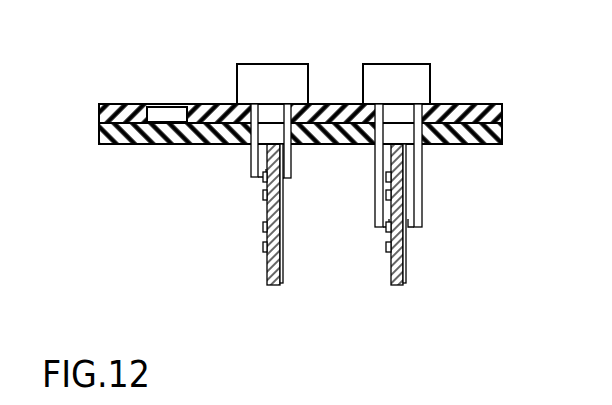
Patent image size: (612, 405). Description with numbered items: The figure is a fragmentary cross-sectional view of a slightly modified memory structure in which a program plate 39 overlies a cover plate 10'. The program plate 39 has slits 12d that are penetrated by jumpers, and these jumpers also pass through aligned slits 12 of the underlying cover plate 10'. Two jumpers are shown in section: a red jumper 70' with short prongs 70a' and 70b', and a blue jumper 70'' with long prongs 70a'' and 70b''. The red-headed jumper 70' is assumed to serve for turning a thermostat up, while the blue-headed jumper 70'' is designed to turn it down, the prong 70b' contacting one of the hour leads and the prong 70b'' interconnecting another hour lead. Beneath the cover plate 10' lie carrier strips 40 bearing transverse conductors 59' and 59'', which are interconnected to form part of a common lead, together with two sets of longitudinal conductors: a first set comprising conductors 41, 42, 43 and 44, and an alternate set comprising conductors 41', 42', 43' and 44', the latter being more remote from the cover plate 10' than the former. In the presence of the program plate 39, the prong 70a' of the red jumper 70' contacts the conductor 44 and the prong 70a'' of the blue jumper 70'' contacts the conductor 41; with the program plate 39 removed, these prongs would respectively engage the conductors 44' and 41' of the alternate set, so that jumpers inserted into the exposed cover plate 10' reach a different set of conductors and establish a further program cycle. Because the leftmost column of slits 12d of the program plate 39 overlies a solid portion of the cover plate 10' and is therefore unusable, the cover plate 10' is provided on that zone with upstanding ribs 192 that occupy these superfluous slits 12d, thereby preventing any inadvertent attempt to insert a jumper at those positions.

The cover plate 10' is at (280, 146).
The program plate 39 is at (113, 102).
The slits of cover plate 12 is at (363, 146).
The slits of program plate 12d is at (235, 117).
The upstanding ribs 192 is at (167, 112).
The blue jumper 70'' is at (272, 56).
The red jumper 70' is at (396, 56).
The long prong of blue jumper 70a'' is at (229, 145).
The long prong of blue jumper 70b'' is at (307, 162).
The short prong of red jumper 70a' is at (340, 191).
The short prong of red jumper 70b' is at (449, 172).
The carrier strips 40 is at (280, 285).
The transverse conductor 59'' is at (310, 224).
The transverse conductor 59' is at (434, 228).
The longitudinal conductor 41 is at (232, 196).
The longitudinal conductor 41' is at (234, 221).
The longitudinal conductor 42 is at (231, 253).
The longitudinal conductor 42' is at (243, 280).
The longitudinal conductor 43 is at (363, 200).
The longitudinal conductor 43' is at (356, 221).
The longitudinal conductor 44 is at (371, 250).
The longitudinal conductor 44' is at (374, 272).